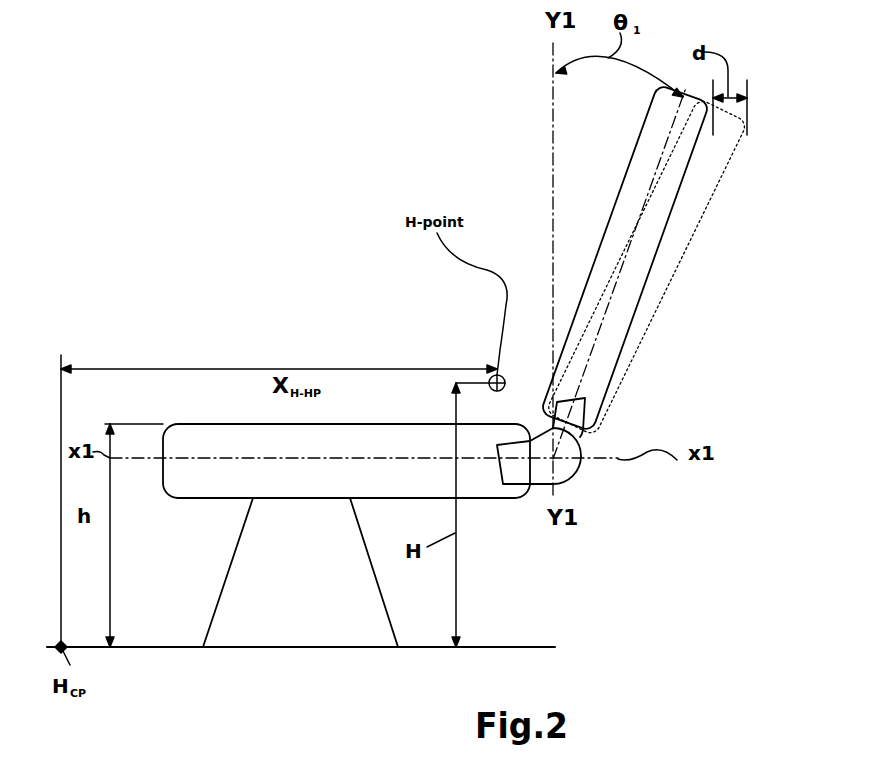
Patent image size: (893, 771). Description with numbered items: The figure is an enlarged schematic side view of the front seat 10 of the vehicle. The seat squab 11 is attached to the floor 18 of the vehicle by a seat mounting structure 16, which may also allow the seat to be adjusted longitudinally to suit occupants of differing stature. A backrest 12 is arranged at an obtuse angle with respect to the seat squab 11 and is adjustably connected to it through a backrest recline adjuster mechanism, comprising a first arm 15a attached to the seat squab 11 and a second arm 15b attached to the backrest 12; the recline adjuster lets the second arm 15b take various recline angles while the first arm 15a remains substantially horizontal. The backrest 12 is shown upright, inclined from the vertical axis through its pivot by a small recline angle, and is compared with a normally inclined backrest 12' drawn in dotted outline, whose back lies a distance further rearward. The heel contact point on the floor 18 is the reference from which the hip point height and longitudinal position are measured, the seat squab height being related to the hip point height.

The front seat 10 is at (435, 424).
The seat squab 11 is at (290, 423).
The backrest 12 is at (659, 275).
The normally inclined backrest 12' is at (672, 267).
The first arm 15a is at (513, 483).
The second arm 15b is at (580, 437).
The seat mounting structure 16 is at (227, 568).
The floor 18 is at (537, 646).